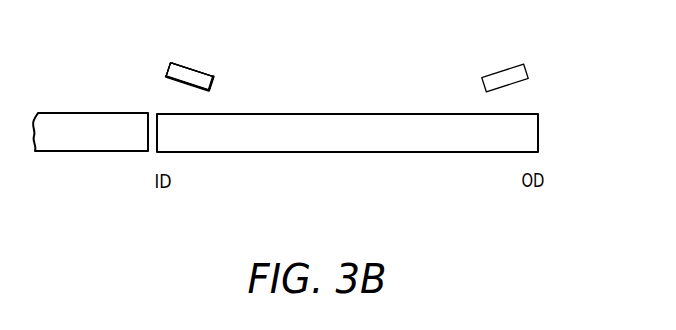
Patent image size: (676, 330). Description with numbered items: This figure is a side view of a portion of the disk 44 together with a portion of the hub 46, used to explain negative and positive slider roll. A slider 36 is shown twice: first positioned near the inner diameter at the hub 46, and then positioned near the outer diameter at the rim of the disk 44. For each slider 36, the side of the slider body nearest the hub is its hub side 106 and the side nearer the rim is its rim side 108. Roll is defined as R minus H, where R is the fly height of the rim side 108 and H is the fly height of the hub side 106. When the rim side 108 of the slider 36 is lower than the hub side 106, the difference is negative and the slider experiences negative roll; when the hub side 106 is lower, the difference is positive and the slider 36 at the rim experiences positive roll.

The slider 36 is at (196, 69).
The disk 44 is at (323, 113).
The hub 46 is at (64, 113).
The hub side 106 is at (168, 72).
The rim side 108 is at (213, 83).